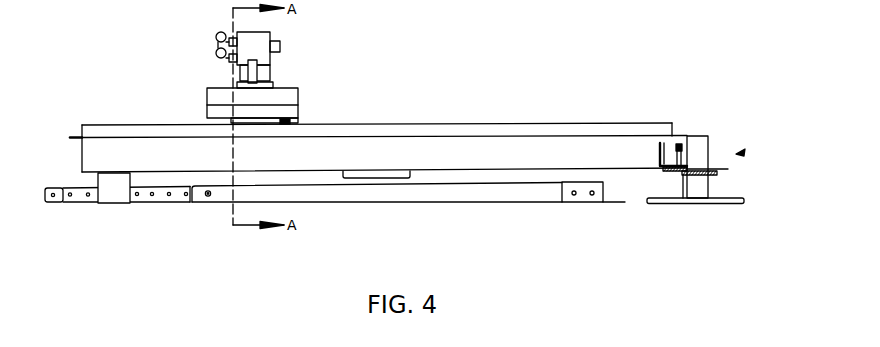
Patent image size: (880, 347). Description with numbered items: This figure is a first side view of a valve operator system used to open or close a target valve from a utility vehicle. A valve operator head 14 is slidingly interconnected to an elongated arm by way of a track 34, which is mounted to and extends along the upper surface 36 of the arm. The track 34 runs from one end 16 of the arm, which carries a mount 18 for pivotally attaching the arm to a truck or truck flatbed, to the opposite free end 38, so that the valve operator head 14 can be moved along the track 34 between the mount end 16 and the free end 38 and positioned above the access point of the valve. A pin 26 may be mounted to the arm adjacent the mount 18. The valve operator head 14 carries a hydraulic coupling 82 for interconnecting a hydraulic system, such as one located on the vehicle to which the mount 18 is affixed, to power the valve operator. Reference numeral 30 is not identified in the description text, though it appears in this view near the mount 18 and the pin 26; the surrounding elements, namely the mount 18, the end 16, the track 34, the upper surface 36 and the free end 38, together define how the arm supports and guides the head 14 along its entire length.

The valve operator head 14 is at (300, 94).
The hydraulic coupling 82 is at (215, 51).
The free end 38 is at (80, 158).
The track 34 is at (518, 122).
The upper surface 36 is at (557, 134).
The end 16 is at (695, 140).
The pin 26 is at (684, 153).
The mount 18 is at (743, 153).
The base plate 30 is at (728, 169).